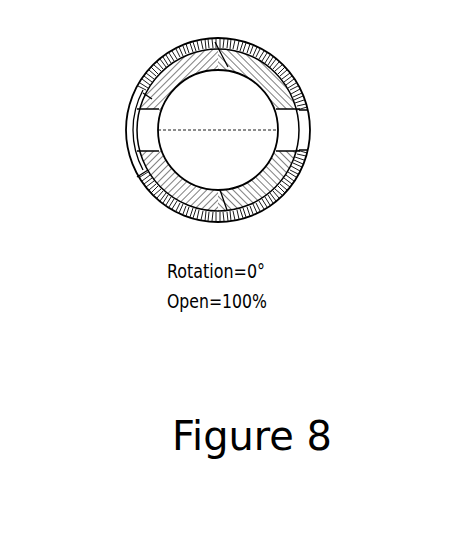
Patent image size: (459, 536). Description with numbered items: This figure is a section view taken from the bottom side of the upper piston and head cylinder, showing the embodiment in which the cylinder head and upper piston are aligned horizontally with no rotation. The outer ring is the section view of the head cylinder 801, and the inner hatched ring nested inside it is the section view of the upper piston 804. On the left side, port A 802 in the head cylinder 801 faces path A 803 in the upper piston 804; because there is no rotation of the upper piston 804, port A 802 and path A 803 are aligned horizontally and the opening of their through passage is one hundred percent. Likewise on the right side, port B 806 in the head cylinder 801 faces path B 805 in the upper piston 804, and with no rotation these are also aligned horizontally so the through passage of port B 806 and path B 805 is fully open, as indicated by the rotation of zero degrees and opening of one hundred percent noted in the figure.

The head cylinder 801 is at (175, 207).
The port A 802 is at (138, 153).
The path A 803 is at (155, 145).
The upper piston 804 is at (198, 70).
The path B 805 is at (285, 132).
The port B 806 is at (300, 136).